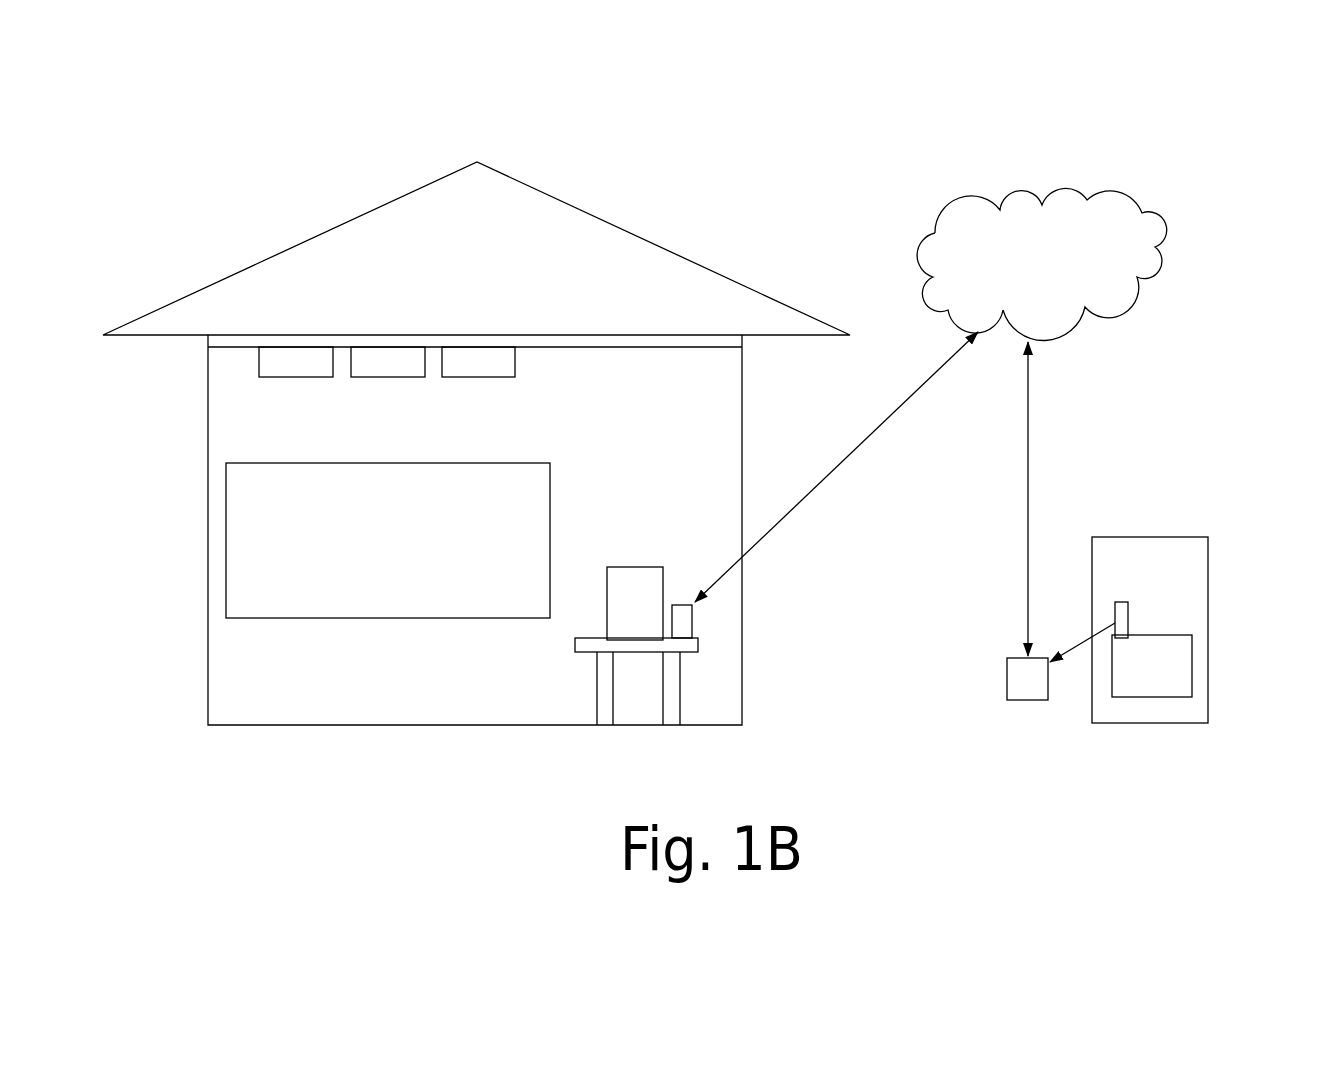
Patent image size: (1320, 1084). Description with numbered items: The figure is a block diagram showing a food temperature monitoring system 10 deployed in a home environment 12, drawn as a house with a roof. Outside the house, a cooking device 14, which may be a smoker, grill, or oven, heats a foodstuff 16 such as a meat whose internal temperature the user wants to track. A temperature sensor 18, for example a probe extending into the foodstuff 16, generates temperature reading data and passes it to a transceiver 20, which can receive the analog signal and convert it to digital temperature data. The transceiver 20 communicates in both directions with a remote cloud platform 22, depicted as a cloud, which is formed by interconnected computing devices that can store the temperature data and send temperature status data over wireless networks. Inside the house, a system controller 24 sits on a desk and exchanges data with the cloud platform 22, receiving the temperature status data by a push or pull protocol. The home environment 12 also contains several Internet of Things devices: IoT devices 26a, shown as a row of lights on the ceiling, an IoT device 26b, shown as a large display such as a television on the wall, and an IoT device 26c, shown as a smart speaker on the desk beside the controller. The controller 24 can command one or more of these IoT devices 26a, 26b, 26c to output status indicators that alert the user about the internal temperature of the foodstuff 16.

The food temperature monitoring system 10 is at (640, 518).
The home environment 12 is at (668, 232).
The cooking device 14 is at (1208, 590).
The foodstuff 16 is at (1138, 677).
The temperature sensor 18 is at (1128, 613).
The transceiver 20 is at (1033, 685).
The cloud platform 22 is at (1058, 230).
The system controller 24 is at (682, 622).
The IoT devices 26a is at (458, 380).
The IoT device 26b is at (358, 546).
The IoT device 26c is at (612, 609).